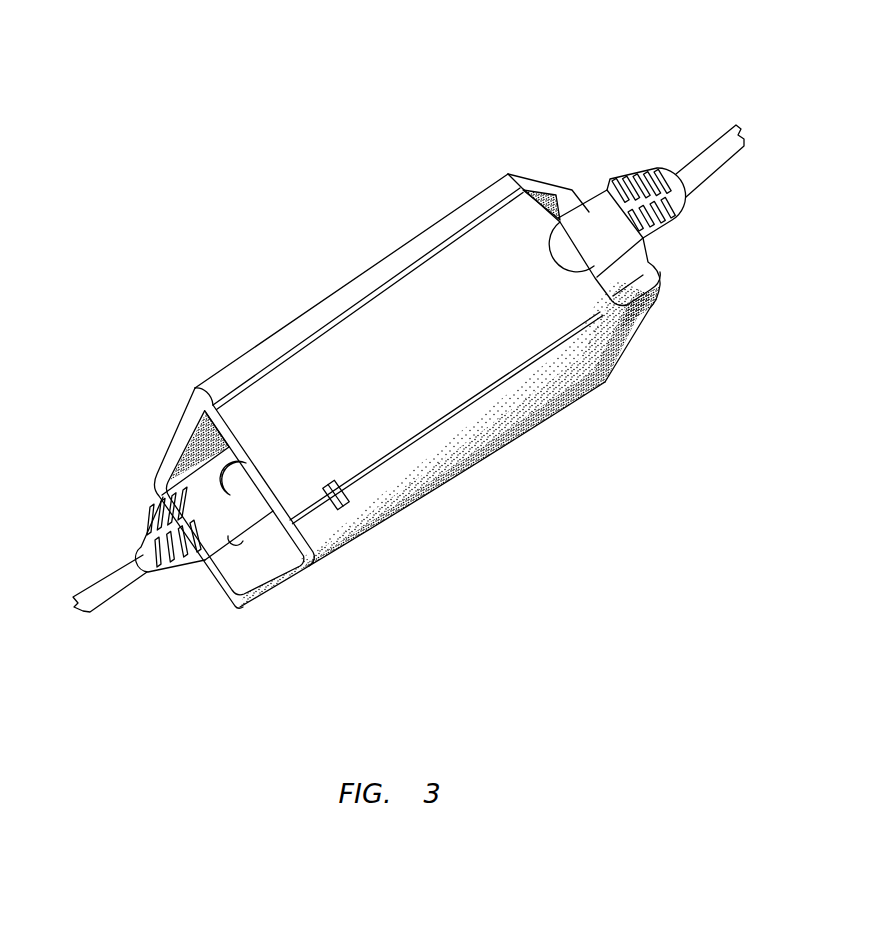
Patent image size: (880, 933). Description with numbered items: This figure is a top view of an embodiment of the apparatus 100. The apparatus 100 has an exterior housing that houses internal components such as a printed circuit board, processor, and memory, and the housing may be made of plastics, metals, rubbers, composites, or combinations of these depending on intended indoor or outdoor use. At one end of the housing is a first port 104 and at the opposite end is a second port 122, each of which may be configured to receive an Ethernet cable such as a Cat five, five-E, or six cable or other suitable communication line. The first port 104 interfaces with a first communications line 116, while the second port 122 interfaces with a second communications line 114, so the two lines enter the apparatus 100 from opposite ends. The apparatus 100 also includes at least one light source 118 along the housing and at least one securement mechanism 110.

The apparatus 100 is at (364, 44).
The first port 104 is at (241, 455).
The securement mechanism 110 is at (232, 545).
The second communications line 114 is at (647, 170).
The first communications line 116 is at (151, 527).
The light source 118 is at (333, 483).
The second port 122 is at (558, 205).